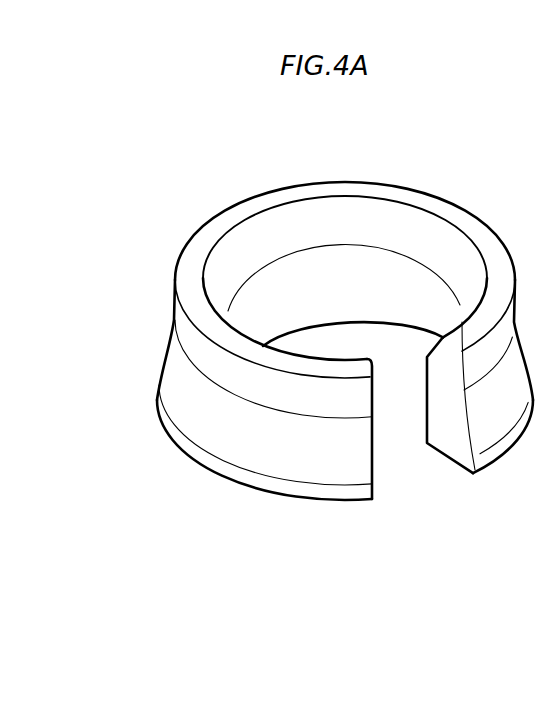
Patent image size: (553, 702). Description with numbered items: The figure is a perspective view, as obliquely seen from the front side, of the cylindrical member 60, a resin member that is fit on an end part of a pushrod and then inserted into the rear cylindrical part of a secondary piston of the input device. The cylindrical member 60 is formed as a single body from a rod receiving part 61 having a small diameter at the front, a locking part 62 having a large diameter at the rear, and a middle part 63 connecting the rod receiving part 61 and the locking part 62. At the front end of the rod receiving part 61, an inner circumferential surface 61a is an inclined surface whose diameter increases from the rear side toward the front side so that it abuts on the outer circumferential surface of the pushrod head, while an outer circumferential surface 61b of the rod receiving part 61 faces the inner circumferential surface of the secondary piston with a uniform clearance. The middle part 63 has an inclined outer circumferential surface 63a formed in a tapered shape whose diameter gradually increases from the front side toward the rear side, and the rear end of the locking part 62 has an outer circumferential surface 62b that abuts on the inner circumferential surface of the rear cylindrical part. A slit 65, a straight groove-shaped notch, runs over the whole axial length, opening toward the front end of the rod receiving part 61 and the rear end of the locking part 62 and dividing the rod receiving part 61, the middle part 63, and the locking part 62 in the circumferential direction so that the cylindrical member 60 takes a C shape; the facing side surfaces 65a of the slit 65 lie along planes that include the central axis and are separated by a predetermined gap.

The cylindrical member 60 is at (271, 178).
The rod receiving part 61 is at (194, 339).
The inner circumferential surface 61a is at (353, 227).
The outer circumferential surface 61b is at (332, 398).
The locking part 62 is at (194, 452).
The outer circumferential surface 62b is at (228, 470).
The middle part 63 is at (181, 378).
The inclined outer circumferential surface 63a is at (287, 445).
The slit 65 is at (417, 490).
The side surface 65a is at (378, 468).